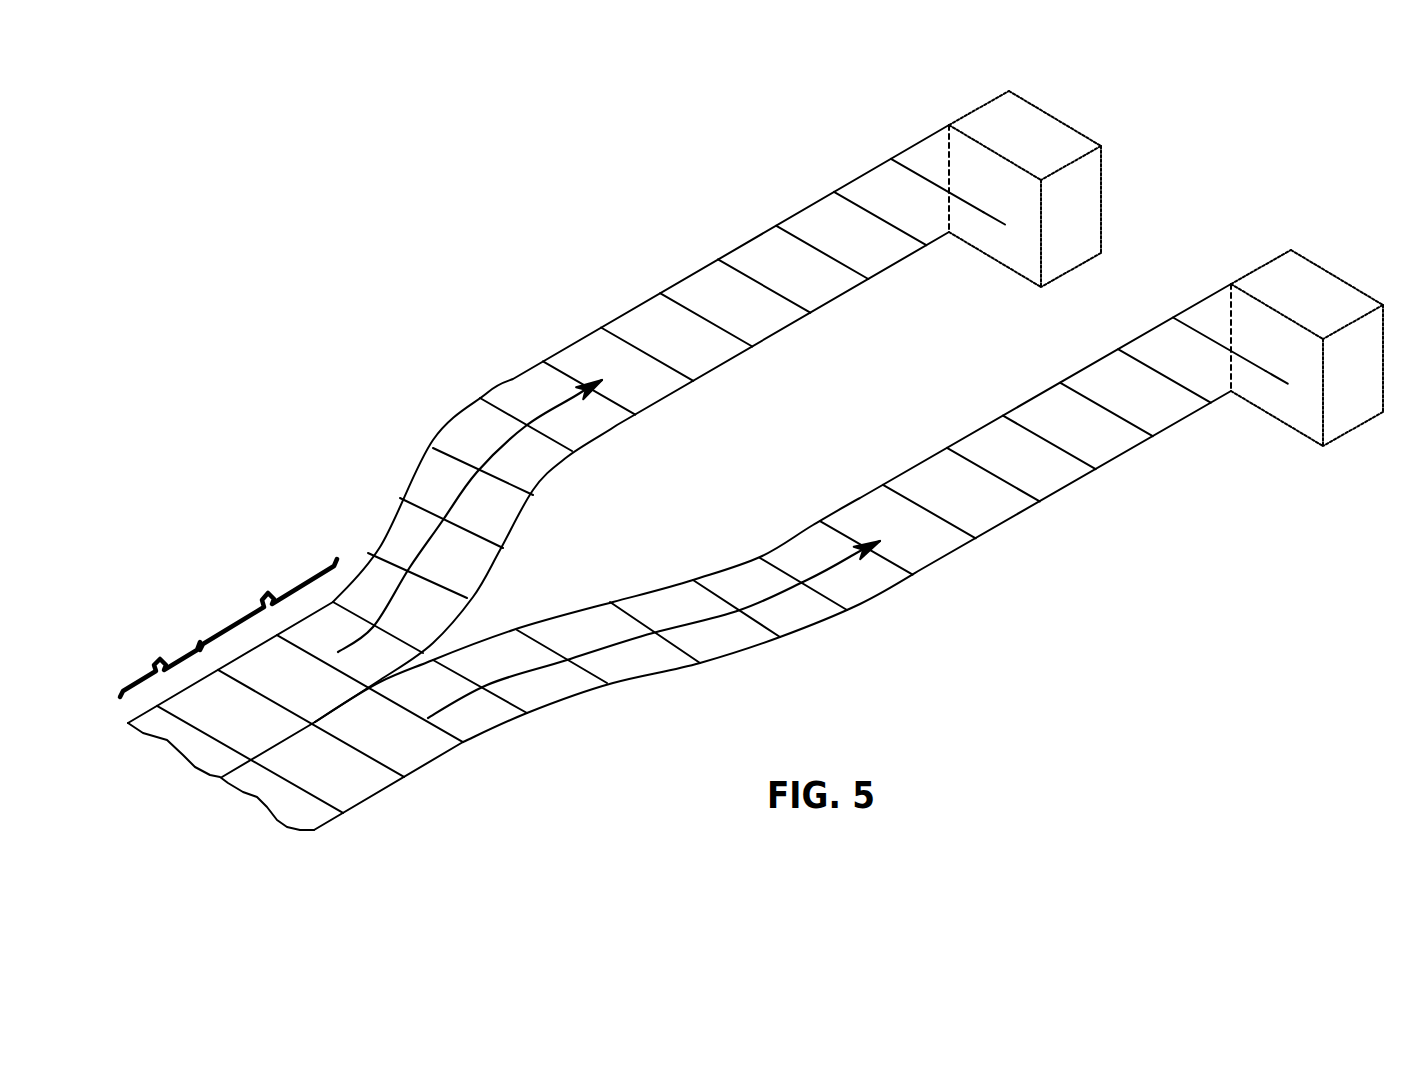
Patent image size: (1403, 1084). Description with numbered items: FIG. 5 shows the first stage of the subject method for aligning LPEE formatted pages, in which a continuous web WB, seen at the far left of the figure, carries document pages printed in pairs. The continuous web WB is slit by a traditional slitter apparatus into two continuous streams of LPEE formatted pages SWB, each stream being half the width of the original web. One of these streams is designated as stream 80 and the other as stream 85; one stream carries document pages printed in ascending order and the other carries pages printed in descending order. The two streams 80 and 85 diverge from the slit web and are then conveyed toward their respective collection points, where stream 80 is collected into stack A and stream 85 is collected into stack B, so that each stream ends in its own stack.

The stream 80 is at (638, 306).
The stream 85 is at (852, 503).
The stack A is at (1025, 189).
The stack B is at (1307, 348).
The continuous web WB is at (160, 658).
The continuous stream of LPEE formatted pages SWB is at (268, 602).